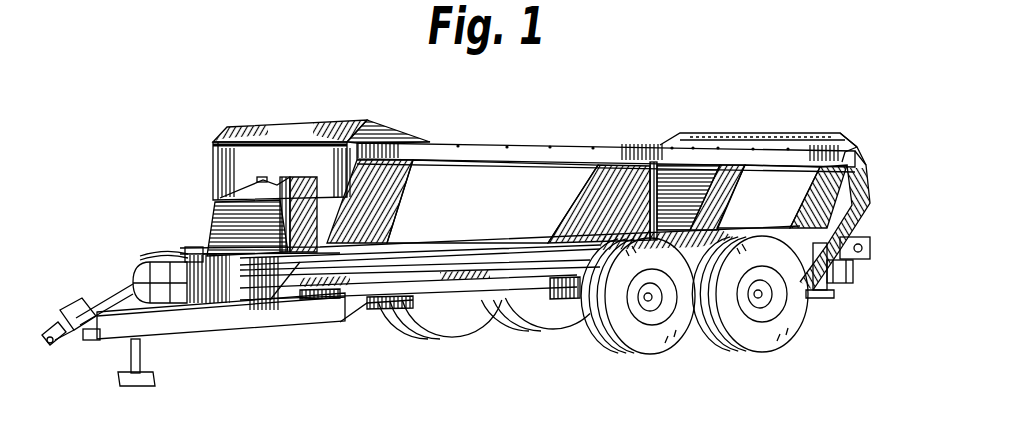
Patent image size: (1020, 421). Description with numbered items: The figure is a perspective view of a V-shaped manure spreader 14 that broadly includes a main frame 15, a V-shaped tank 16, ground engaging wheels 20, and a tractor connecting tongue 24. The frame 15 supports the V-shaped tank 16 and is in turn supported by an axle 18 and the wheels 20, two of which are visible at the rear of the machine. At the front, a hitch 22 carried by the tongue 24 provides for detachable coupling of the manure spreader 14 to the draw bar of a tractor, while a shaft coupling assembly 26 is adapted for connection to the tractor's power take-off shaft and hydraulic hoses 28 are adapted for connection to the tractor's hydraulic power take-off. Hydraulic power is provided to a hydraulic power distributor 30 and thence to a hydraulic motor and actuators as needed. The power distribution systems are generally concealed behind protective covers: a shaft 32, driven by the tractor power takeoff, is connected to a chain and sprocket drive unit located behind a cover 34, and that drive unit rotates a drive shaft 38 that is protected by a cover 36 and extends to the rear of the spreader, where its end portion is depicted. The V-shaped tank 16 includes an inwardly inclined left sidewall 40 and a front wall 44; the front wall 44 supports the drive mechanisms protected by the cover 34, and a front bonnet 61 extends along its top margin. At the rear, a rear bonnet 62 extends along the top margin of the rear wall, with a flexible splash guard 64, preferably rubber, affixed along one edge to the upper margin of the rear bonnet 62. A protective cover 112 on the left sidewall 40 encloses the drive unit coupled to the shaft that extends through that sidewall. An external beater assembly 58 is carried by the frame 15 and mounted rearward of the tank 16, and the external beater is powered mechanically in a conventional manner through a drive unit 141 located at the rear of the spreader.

The manure spreader 14 is at (369, 85).
The main frame 15 is at (410, 313).
The V-shaped tank 16 is at (473, 140).
The axle 18 is at (583, 330).
The ground engaging wheels 20 is at (530, 320).
The hitch 22 is at (83, 337).
The tractor connecting tongue 24 is at (205, 320).
The shaft coupling assembly 26 is at (58, 320).
The hydraulic hoses 28 is at (136, 252).
The hydraulic power distributor 30 is at (185, 248).
The shaft 32 is at (124, 287).
The cover 34 is at (297, 310).
The cover 36 is at (380, 300).
The drive shaft 38 is at (846, 278).
The left sidewall 40 is at (520, 180).
The front wall 44 is at (212, 162).
The external beater assembly 58 is at (856, 272).
The front bonnet 61 is at (348, 120).
The rear bonnet 62 is at (875, 110).
The splash guard 64 is at (755, 142).
The protective cover 112 is at (858, 165).
The drive unit 141 is at (866, 247).